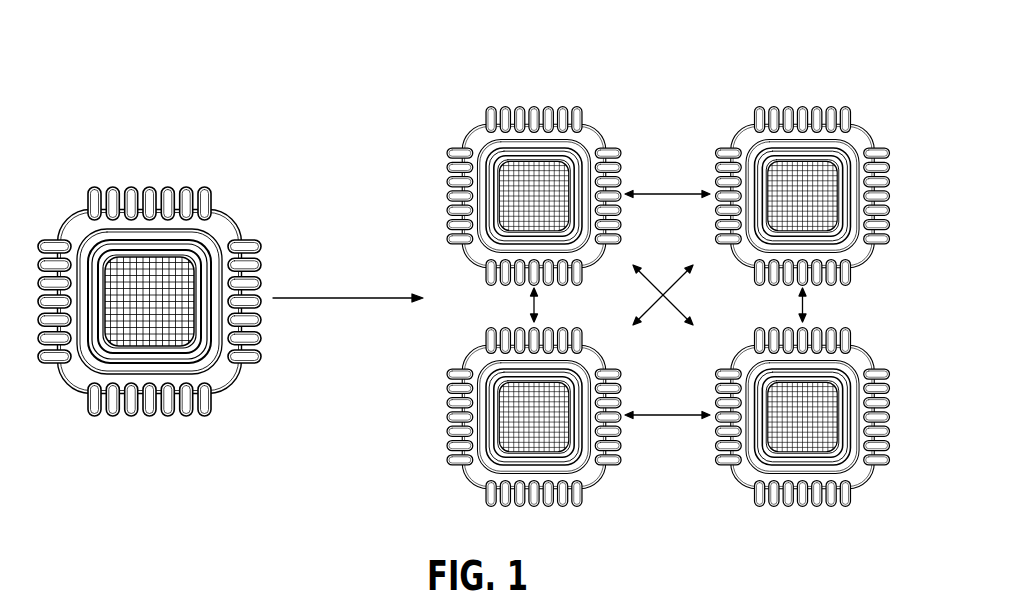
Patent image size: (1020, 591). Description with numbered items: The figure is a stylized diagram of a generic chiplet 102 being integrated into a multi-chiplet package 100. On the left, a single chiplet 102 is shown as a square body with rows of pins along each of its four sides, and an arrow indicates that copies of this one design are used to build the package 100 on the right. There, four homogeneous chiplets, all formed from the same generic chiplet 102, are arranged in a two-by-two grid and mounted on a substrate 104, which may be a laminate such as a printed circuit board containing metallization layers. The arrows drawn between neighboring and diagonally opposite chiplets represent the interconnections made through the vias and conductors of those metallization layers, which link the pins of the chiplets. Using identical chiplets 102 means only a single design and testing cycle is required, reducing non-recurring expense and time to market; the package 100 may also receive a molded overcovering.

The package 100 is at (798, 45).
The generic chiplet 102 is at (207, 194).
The substrate 104 is at (822, 302).